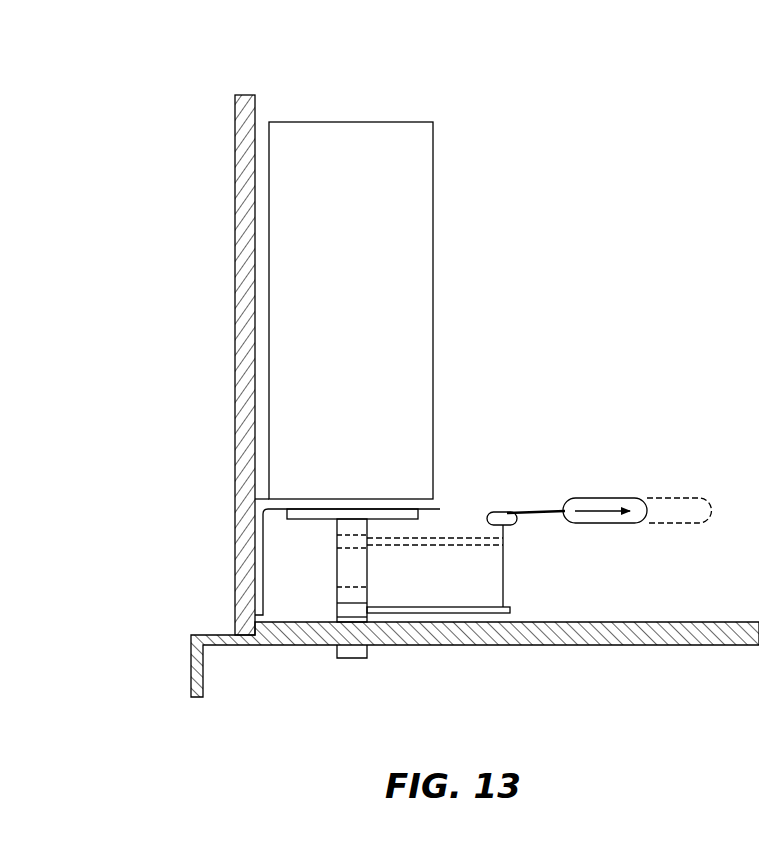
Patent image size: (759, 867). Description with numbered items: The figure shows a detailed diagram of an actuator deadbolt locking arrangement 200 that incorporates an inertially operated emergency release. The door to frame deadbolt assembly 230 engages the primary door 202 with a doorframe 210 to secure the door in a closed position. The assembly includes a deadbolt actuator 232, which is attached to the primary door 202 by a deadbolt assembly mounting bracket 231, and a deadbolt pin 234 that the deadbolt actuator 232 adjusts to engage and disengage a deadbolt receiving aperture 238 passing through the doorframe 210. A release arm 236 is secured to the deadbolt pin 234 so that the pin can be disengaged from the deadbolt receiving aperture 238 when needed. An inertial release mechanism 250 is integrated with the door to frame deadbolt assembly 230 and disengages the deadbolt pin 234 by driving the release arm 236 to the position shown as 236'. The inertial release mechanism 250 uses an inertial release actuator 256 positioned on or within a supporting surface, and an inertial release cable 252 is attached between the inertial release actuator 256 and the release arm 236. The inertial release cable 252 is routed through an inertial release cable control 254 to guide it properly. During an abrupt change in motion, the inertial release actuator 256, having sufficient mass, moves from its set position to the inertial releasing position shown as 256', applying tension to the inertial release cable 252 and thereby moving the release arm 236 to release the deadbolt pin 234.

The assembly 200 is at (143, 96).
The primary door 202 is at (235, 310).
The doorframe 210 is at (191, 680).
The door to frame deadbolt assembly 230 is at (485, 388).
The deadbolt assembly mounting bracket 231 is at (250, 553).
The deadbolt actuator 232 is at (433, 348).
The deadbolt pin 234 is at (355, 650).
The release arm 236 is at (438, 594).
The release arm in released position 236' is at (449, 509).
The deadbolt receiving aperture 238 is at (329, 654).
The inertial release mechanism 250 is at (603, 571).
The inertial release cable 252 is at (505, 578).
The inertial release cable control 254 is at (517, 520).
The inertial release actuator 256 is at (608, 492).
The inertial release actuator in inertial releasing position 256' is at (687, 531).